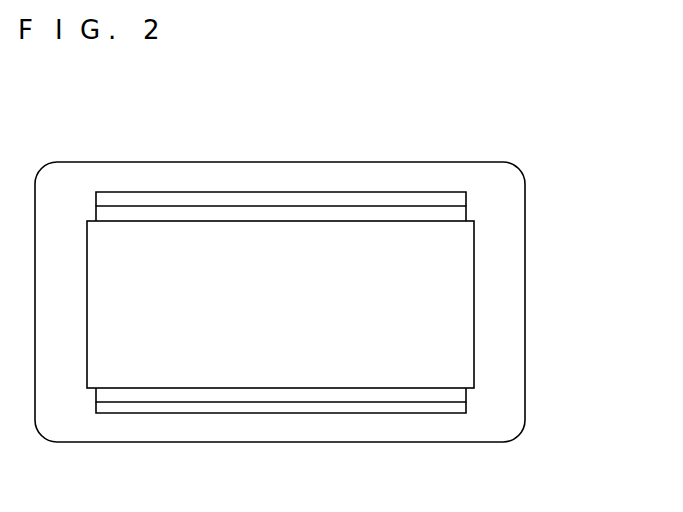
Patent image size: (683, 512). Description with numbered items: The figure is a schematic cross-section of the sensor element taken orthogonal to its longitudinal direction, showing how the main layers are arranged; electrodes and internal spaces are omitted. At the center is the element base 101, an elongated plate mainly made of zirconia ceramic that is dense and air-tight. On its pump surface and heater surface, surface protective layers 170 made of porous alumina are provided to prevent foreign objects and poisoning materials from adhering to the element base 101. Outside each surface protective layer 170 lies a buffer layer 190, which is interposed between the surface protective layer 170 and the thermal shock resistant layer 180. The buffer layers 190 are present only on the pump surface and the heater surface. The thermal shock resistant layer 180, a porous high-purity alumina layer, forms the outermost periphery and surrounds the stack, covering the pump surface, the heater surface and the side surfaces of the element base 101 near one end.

The element base 101 is at (465, 303).
The surface protective layer 170 is at (453, 215).
The thermal shock resistant layer 180 is at (513, 267).
The buffer layer 190 is at (408, 197).